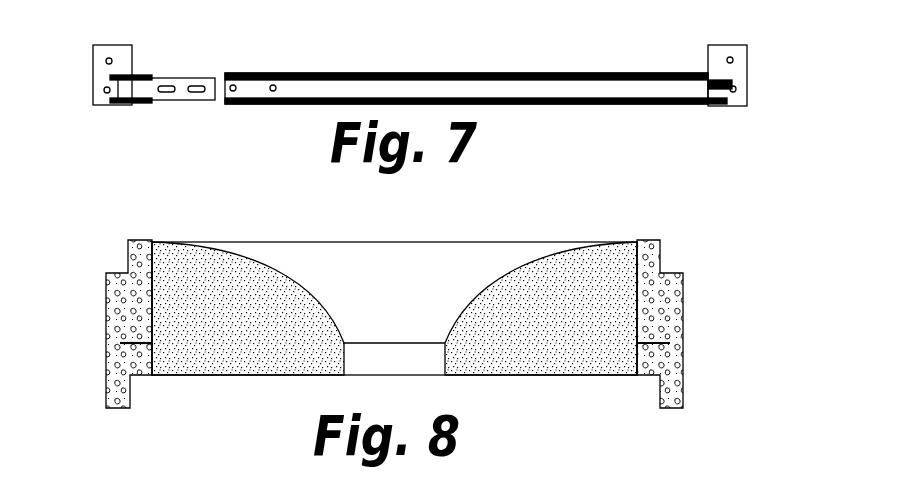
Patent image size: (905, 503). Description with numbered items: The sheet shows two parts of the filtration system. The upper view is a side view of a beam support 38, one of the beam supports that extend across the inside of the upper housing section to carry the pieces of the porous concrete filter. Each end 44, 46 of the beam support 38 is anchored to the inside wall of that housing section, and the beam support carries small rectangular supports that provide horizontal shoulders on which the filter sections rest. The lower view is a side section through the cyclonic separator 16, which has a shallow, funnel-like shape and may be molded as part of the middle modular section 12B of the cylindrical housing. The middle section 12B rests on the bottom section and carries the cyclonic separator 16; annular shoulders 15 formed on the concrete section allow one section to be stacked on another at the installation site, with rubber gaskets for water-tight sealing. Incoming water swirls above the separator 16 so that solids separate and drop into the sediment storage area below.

In FIG. 7, the end of beam support 44 is at (95, 89).
In FIG. 7, the beam support 38 is at (375, 73).
In FIG. 7, the end of beam support 46 is at (708, 62).
In FIG. 8, the middle modular section 12B is at (106, 310).
In FIG. 8, the annular shoulder 15 is at (660, 393).
In FIG. 8, the cyclonic separator 16 is at (228, 400).